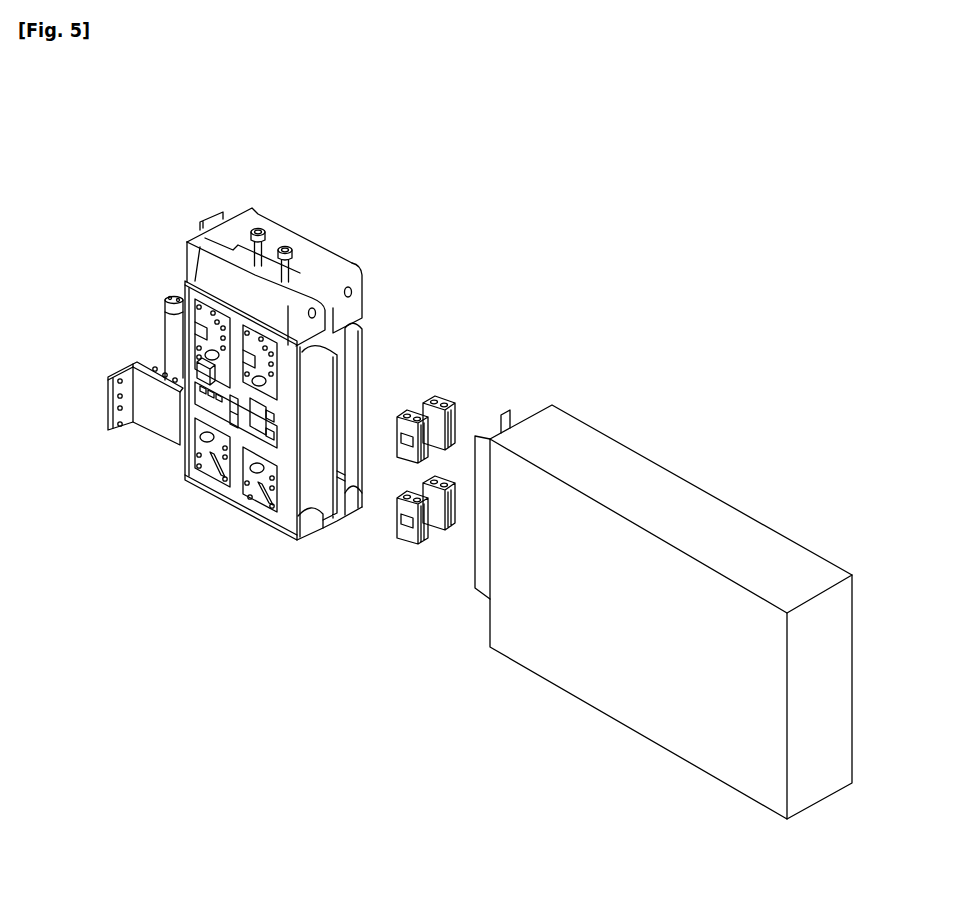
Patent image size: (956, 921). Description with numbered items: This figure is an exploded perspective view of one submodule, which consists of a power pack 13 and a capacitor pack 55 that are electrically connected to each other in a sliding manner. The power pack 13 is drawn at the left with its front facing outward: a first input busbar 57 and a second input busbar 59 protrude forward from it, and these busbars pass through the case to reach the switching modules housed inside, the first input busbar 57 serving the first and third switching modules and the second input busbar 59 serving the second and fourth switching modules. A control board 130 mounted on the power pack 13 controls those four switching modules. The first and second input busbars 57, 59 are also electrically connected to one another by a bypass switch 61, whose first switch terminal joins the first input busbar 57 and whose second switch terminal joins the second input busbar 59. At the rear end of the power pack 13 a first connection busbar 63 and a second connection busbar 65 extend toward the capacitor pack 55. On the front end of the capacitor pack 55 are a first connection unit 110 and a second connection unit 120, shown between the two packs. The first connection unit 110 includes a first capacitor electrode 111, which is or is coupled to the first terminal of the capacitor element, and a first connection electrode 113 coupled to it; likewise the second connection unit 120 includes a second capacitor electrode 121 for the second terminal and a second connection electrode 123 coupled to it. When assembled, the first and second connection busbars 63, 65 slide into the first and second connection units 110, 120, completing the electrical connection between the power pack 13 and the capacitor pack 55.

The power pack 13 is at (365, 265).
The capacitor pack 55 is at (725, 470).
The first input busbar 57 is at (100, 400).
The second input busbar 59 is at (197, 221).
The bypass switch 61 is at (158, 332).
The first connection busbar 63 is at (370, 335).
The second connection busbar 65 is at (310, 522).
The first connection unit 110 is at (547, 276).
The first capacitor electrode 111 is at (508, 413).
The first connection electrode 113 is at (442, 395).
The second connection unit 120 is at (490, 745).
The second capacitor electrode 121 is at (481, 589).
The second connection electrode 123 is at (405, 535).
The control board 130 is at (187, 462).